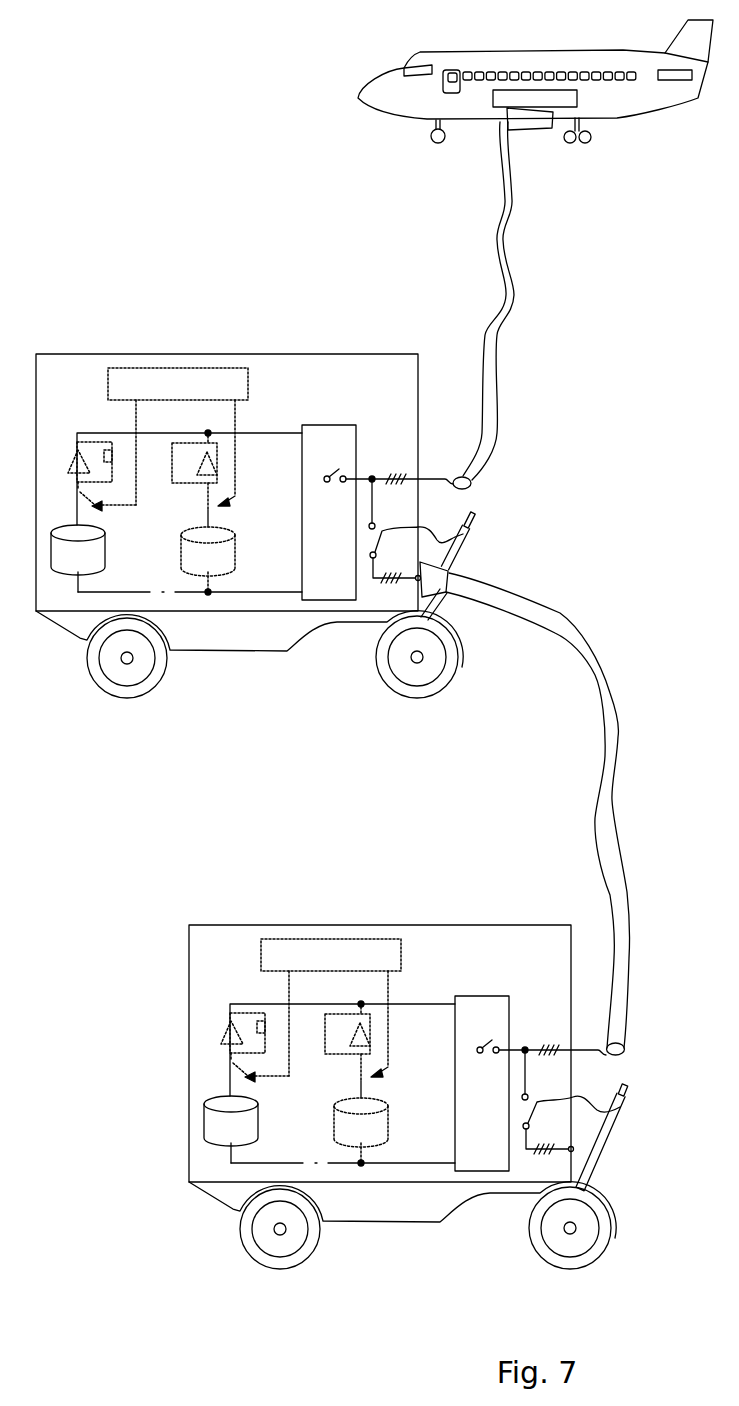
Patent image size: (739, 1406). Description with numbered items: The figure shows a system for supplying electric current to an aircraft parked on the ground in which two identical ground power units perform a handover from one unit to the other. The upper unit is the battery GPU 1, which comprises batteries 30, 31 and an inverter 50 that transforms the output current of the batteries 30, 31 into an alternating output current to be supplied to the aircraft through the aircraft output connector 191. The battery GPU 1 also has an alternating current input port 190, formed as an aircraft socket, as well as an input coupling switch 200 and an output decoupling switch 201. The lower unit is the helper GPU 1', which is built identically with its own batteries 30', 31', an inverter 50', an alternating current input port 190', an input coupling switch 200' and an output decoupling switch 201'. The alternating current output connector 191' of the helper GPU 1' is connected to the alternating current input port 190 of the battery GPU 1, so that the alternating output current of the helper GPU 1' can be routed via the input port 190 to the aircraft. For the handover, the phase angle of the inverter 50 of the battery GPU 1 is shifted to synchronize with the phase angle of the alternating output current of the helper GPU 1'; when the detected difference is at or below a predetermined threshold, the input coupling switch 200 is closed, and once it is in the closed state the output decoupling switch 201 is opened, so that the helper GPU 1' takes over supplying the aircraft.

The battery GPU 1 is at (289, 491).
The helper GPU 1' is at (444, 1061).
The battery 30 is at (96, 558).
The battery 30' is at (250, 1129).
The battery 31 is at (238, 559).
The battery 31' is at (392, 1130).
The inverter 50 is at (327, 493).
The inverter 50' is at (481, 1064).
The alternating current input port 190 is at (360, 633).
The alternating current input port 190' is at (498, 1213).
The aircraft output connector 191 is at (452, 305).
The alternating current output connector 191' is at (538, 814).
The input coupling switch 200 is at (491, 541).
The input coupling switch 200' is at (638, 1137).
The output decoupling switch 201 is at (346, 434).
The output decoupling switch 201' is at (501, 1005).